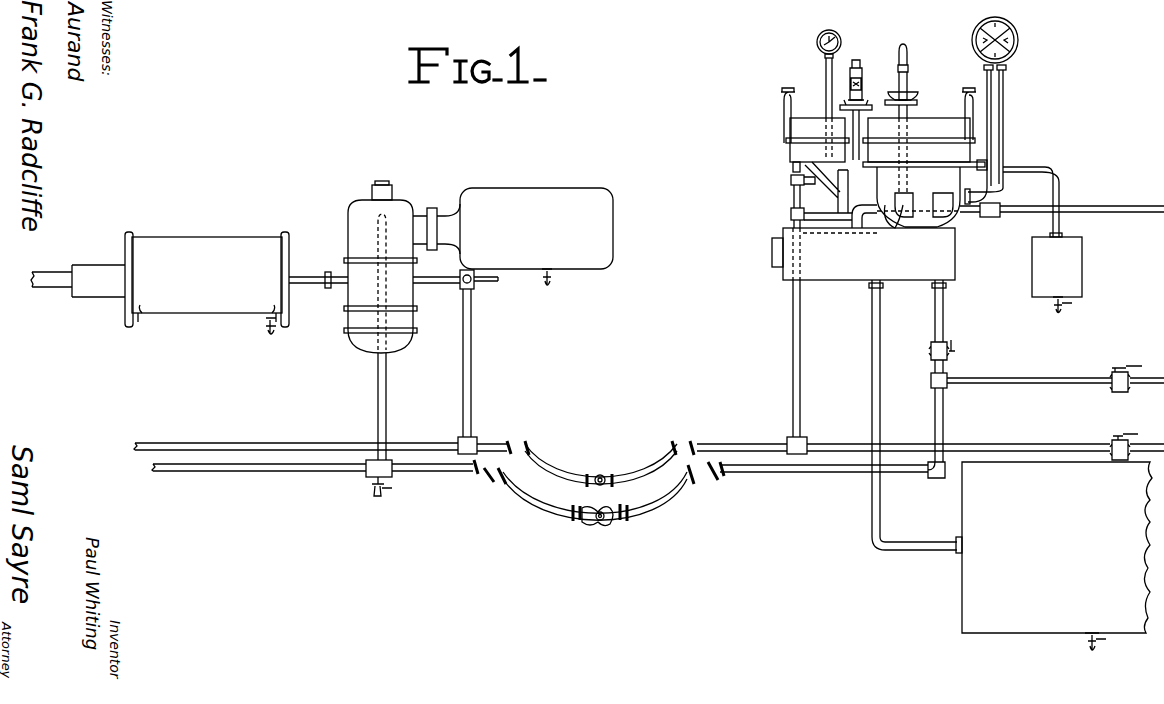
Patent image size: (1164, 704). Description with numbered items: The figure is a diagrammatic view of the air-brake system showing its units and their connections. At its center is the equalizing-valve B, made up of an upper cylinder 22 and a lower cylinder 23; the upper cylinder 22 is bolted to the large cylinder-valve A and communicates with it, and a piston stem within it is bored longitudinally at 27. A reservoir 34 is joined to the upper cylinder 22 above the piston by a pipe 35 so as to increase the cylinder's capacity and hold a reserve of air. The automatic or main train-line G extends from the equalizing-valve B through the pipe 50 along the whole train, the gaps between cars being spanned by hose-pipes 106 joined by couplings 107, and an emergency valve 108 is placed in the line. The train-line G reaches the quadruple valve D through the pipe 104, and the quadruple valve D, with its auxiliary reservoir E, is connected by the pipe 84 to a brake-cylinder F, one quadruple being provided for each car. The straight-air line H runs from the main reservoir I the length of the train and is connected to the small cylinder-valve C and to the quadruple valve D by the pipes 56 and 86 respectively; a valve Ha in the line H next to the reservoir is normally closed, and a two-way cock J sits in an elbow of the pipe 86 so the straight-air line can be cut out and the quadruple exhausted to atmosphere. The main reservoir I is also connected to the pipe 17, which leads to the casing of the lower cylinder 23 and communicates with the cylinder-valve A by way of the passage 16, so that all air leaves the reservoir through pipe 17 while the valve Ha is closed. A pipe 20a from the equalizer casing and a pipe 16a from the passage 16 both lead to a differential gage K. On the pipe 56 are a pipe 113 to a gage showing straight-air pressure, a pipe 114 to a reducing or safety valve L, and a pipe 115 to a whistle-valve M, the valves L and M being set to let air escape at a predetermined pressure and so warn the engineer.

The cylinder-valve A is at (925, 129).
The equalizing-valve B is at (878, 254).
The small cylinder-valve C is at (815, 125).
The quadruple valve D is at (377, 267).
The auxiliary reservoir E is at (513, 236).
The brake-cylinder F is at (160, 283).
The main train-line G is at (457, 474).
The straight-air line H is at (298, 446).
The valve Ha is at (1116, 440).
The main reservoir I is at (1057, 556).
The two-way cock J is at (474, 285).
The differential gage K is at (1018, 40).
The reducing or safety valve L is at (862, 65).
The whistle-valve M is at (907, 58).
The passage 16 is at (880, 212).
The pipe 16a is at (1103, 210).
The pipe 17 is at (876, 326).
The pipe 20a is at (1003, 100).
The upper cylinder 22 is at (918, 197).
The lower cylinder 23 is at (826, 261).
The bore 27 is at (958, 210).
The reservoir 34 is at (1057, 273).
The pipe 35 is at (1041, 201).
The pipe 50 is at (944, 306).
The pipe 56 is at (800, 328).
The pipe 84 is at (306, 278).
The pipe 86 is at (446, 284).
The pipe 104 is at (386, 386).
The hose-pipe 106 is at (676, 517).
The coupling 107 is at (602, 522).
The valve 108 is at (367, 474).
The pipe 113 is at (826, 70).
The pipe 114 is at (818, 214).
The pipe 115 is at (908, 112).